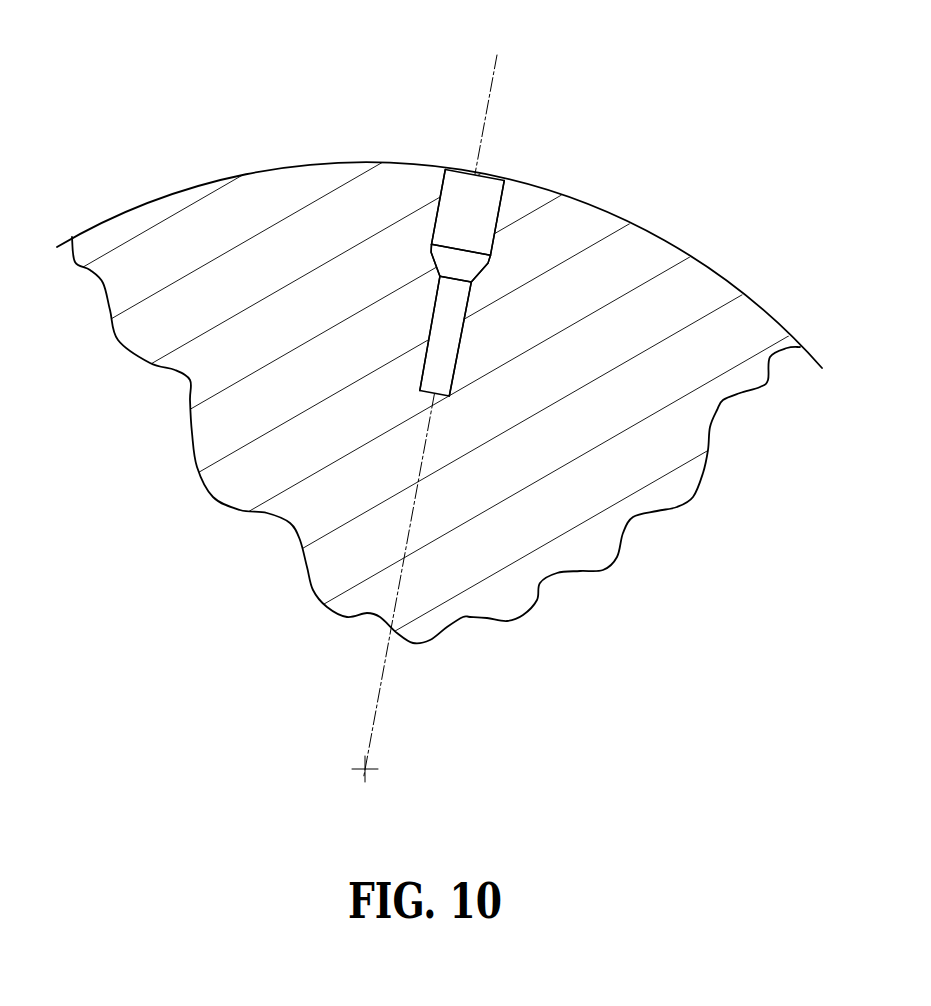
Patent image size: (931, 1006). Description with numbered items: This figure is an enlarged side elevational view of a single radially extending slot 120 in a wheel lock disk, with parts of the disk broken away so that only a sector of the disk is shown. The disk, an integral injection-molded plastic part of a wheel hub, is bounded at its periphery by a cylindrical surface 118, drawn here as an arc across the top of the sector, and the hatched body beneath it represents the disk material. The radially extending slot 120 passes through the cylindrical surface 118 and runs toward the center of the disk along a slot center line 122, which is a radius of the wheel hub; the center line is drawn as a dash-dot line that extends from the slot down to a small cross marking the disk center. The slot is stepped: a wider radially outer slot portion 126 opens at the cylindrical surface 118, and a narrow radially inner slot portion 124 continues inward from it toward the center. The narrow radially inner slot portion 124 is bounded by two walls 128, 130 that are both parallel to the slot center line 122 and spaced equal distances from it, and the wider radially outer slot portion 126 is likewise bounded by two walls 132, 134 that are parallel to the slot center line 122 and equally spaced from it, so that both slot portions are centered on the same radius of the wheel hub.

The cylindrical surface 118 is at (318, 166).
The radially extending slot 120 is at (486, 62).
The slot center line 122 is at (377, 702).
The narrow radially inner slot portion 124 is at (472, 257).
The wider radially outer slot portion 126 is at (447, 182).
The wall 128 is at (423, 371).
The wall 130 is at (455, 343).
The wall 132 is at (435, 236).
The wall 134 is at (502, 187).